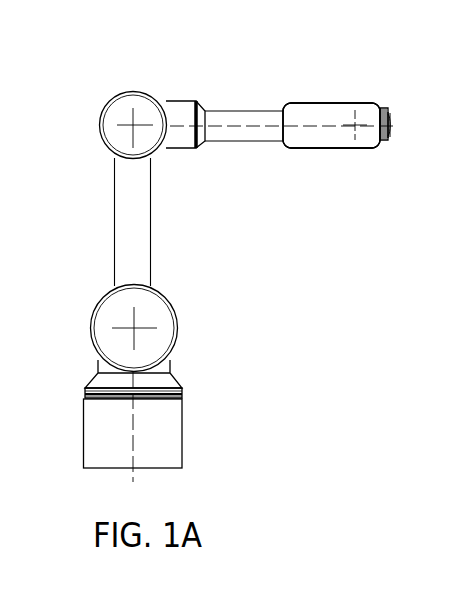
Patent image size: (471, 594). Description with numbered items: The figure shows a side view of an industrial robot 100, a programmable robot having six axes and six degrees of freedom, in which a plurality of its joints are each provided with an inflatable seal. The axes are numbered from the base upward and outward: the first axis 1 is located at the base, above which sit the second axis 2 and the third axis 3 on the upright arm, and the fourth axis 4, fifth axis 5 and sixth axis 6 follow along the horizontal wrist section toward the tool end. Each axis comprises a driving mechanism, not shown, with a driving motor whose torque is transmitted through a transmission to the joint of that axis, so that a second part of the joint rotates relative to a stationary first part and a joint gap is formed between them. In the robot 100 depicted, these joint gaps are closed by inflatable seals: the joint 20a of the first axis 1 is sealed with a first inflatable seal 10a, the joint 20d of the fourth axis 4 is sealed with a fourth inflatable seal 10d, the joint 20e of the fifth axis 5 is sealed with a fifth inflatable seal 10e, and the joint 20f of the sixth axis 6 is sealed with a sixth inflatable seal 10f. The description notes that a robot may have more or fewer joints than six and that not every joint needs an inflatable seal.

The first axis 1 is at (132, 440).
The second axis 2 is at (136, 327).
The third axis 3 is at (133, 125).
The fourth axis 4 is at (222, 128).
The fifth axis 5 is at (342, 127).
The sixth axis 6 is at (389, 127).
The industrial robot 100 is at (143, 275).
The first inflatable seal 10a is at (172, 395).
The fourth inflatable seal 10d is at (193, 99).
The fifth inflatable seal 10e is at (283, 122).
The sixth inflatable seal 10f is at (379, 108).
The joint of the first axis 20a is at (120, 392).
The joint of the fourth axis 20d is at (197, 150).
The joint of the fifth axis 20e is at (308, 132).
The joint of the sixth axis 20f is at (388, 130).